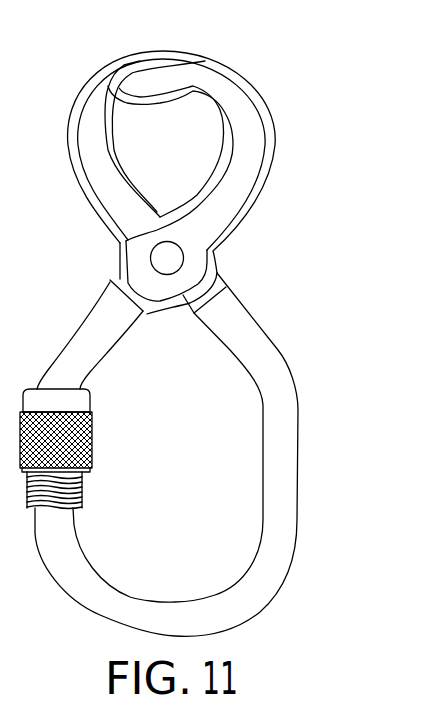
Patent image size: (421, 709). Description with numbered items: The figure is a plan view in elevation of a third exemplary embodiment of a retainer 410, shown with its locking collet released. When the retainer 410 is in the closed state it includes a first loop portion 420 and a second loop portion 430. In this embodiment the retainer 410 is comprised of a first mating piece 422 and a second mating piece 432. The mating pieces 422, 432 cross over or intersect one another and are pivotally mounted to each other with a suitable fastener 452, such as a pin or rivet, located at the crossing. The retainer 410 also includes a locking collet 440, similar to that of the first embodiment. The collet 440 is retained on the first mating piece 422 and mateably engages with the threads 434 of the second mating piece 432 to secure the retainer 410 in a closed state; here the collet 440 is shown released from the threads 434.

The retainer 410 is at (305, 222).
The first loop portion 420 is at (262, 97).
The first mating piece 422 is at (110, 282).
The fastener 452 is at (184, 257).
The second loop portion 430 is at (297, 550).
The second mating piece 432 is at (290, 470).
The locking collet 440 is at (92, 440).
The threads 434 is at (82, 494).